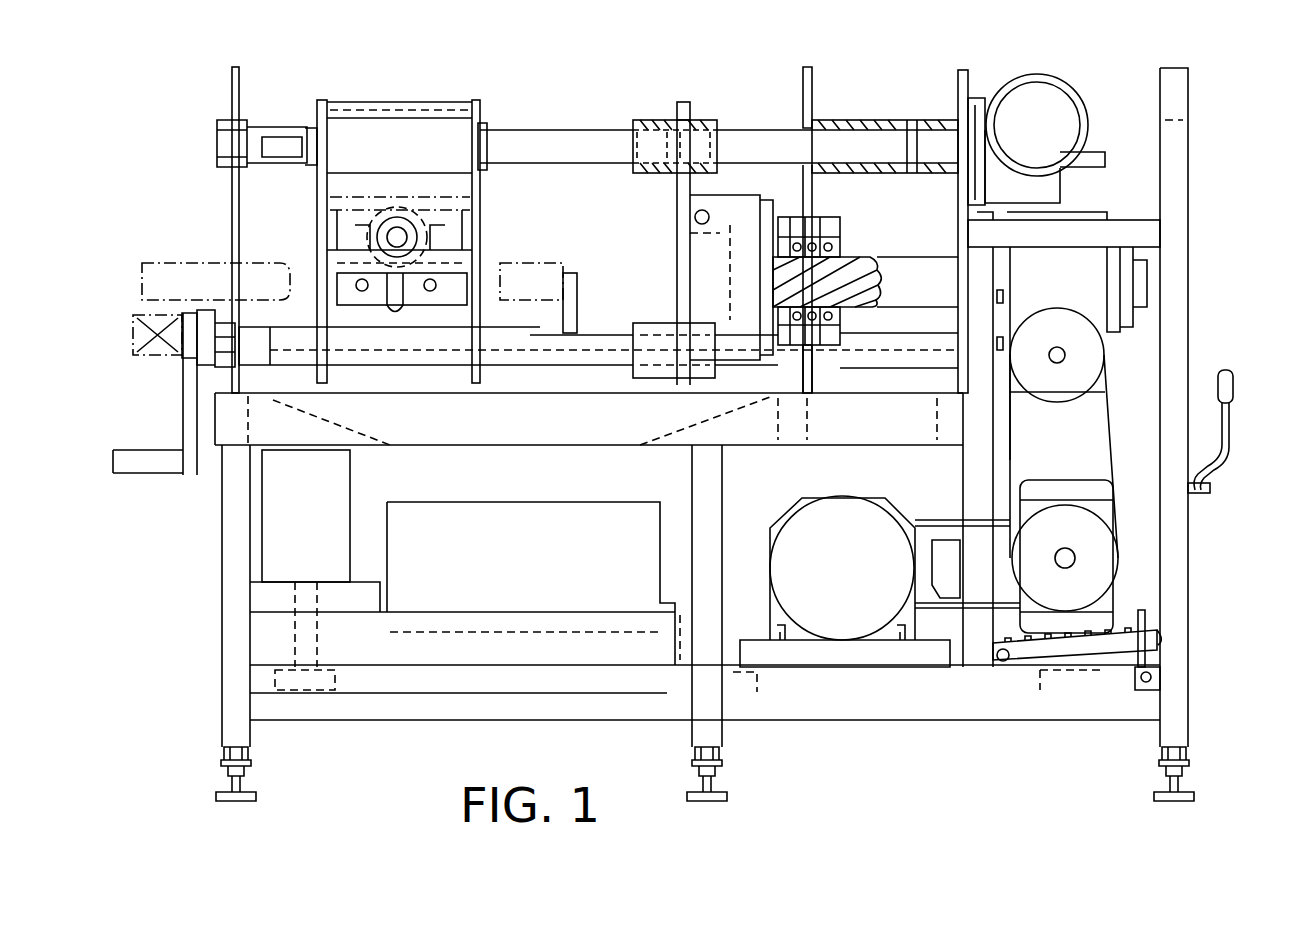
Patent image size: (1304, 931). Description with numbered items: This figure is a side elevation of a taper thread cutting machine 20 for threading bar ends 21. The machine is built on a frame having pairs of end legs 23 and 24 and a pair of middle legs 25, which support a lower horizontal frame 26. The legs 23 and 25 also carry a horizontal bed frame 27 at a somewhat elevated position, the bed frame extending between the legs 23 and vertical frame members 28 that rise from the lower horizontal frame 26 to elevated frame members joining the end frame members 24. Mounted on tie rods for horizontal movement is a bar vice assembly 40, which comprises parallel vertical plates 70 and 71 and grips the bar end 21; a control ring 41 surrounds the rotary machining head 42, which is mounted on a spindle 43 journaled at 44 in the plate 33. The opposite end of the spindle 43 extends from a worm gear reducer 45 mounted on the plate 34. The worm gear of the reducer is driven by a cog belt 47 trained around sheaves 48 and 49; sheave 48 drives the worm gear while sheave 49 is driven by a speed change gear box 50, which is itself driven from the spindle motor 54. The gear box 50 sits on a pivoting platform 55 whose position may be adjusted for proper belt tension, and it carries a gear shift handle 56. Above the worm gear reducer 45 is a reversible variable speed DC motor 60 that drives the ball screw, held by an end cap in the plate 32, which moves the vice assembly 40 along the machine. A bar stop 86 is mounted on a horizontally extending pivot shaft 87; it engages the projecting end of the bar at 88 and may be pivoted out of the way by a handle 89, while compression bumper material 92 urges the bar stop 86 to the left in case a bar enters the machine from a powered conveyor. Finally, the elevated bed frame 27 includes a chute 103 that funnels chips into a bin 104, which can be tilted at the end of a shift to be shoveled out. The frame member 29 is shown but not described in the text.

The taper thread cutting machine 20 is at (1218, 203).
The bar end 21 is at (199, 262).
The end legs 23 is at (228, 574).
The end legs 24 is at (1175, 560).
The middle legs 25 is at (720, 492).
The lower horizontal frame 26 is at (802, 708).
The bed frame 27 is at (883, 440).
The vertical frame members 28 is at (977, 483).
The motor base plate 29 is at (1115, 232).
The plate 32 is at (239, 67).
The plate 33 is at (810, 68).
The plate 34 is at (958, 72).
The bar vice assembly 40 is at (452, 100).
The control ring 41 is at (677, 300).
The rotary machining head 42 is at (728, 193).
The spindle 43 is at (884, 258).
The journal 44 is at (818, 223).
The worm gear reducer 45 is at (1087, 277).
The cog belt 47 is at (1108, 405).
The sheave 48 is at (1090, 355).
The sheave 49 is at (1108, 553).
The speed change gear box 50 is at (1103, 606).
The spindle motor 54 is at (845, 628).
The pivoting platform 55 is at (1087, 647).
The gear shift handle 56 is at (1233, 417).
The reversible variable speed DC motor 60 is at (1055, 95).
The vertical plate 70 is at (318, 203).
The vertical plate 71 is at (482, 202).
The bar stop 86 is at (578, 274).
The pivot shaft 87 is at (515, 373).
The projecting end of the bar 88 is at (560, 232).
The handle 89 is at (147, 467).
The compression bumper material 92 is at (170, 350).
The chute 103 is at (293, 400).
The bin 104 is at (558, 515).